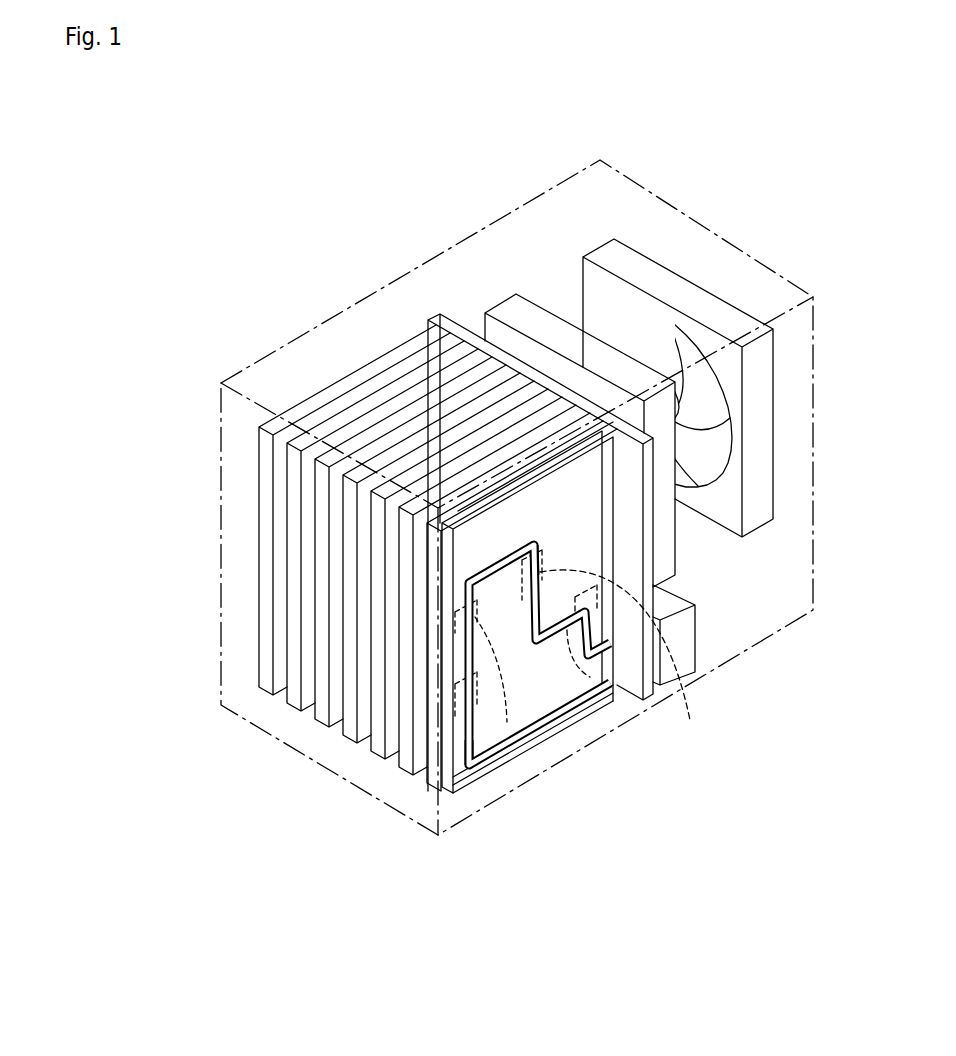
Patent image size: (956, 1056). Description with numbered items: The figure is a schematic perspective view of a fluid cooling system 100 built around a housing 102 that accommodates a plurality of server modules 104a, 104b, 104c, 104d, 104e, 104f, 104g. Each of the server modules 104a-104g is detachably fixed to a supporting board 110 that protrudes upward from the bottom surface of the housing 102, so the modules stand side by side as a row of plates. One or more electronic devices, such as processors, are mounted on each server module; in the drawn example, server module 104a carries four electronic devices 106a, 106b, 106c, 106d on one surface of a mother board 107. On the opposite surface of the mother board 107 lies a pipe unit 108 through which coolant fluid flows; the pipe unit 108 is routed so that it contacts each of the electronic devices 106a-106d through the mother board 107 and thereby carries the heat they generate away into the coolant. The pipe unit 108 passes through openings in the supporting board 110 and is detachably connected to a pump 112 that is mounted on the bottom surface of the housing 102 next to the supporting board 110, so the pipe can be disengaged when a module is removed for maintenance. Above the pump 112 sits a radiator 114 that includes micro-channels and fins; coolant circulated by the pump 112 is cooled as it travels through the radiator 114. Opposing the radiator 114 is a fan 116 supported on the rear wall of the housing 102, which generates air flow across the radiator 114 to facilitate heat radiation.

The cooling system 100 is at (325, 175).
The housing 102 is at (221, 444).
The server module 104a is at (436, 792).
The server module 104b is at (412, 780).
The server module 104c is at (377, 753).
The server module 104d is at (344, 733).
The server module 104e is at (327, 719).
The server module 104f is at (290, 700).
The server module 104g is at (257, 675).
The electronic device 106a is at (473, 770).
The electronic device 106b is at (514, 746).
The electronic device 106c is at (655, 626).
The electronic device 106d is at (556, 644).
The mother board 107 is at (481, 738).
The pipe unit 108 is at (553, 710).
The supporting board 110 is at (437, 320).
The pump 112 is at (682, 628).
The radiator 114 is at (512, 310).
The fan 116 is at (614, 257).